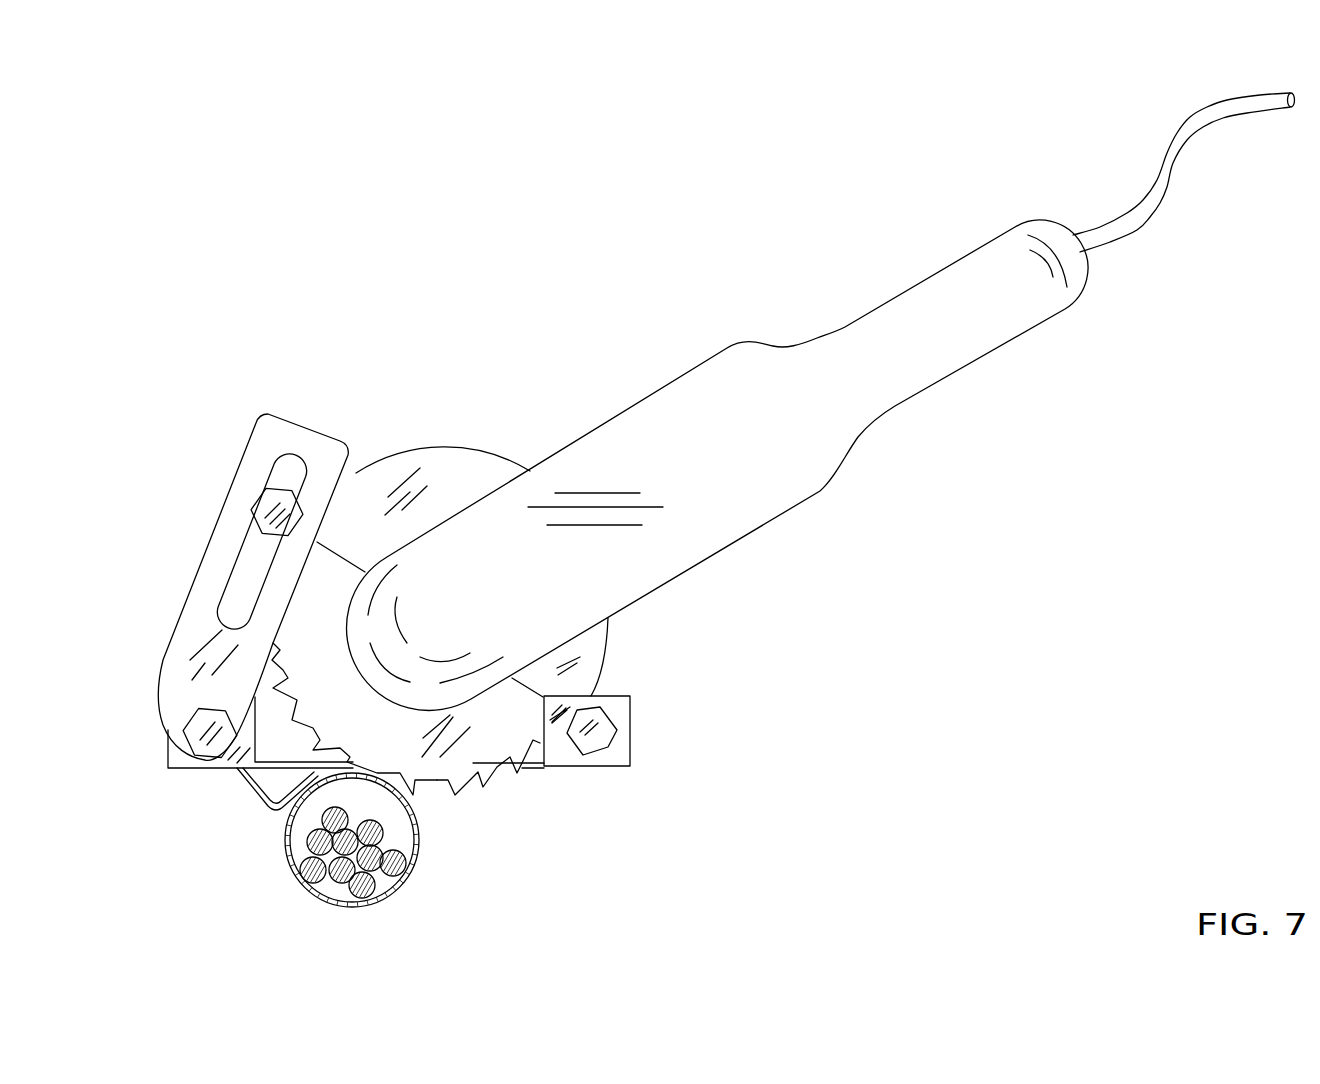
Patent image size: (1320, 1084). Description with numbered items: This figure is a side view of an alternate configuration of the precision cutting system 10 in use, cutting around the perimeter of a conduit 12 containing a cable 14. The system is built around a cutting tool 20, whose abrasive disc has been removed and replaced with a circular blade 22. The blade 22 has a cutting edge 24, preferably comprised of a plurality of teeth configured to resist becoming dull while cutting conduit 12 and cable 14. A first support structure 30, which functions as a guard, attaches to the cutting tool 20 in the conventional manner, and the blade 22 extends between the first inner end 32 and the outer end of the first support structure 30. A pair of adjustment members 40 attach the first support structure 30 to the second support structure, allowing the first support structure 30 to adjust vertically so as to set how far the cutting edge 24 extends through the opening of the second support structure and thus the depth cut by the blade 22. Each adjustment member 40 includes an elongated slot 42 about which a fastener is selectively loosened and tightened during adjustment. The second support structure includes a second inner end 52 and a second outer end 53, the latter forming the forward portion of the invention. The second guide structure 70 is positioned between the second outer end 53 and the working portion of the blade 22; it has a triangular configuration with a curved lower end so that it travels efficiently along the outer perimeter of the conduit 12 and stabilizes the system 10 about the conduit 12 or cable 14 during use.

The precision cutting system 10 is at (225, 162).
The conduit 12 is at (420, 866).
The cable 14 is at (300, 843).
The cutting tool 20 is at (837, 478).
The blade 22 is at (500, 767).
The cutting edge 24 is at (448, 782).
The first support structure 30 is at (493, 453).
The first inner end 32 is at (600, 670).
The adjustment member 40 is at (190, 577).
The slot 42 is at (322, 468).
The second inner end 52 is at (624, 743).
The second outer end 53 is at (168, 760).
The second guide structure 70 is at (253, 800).